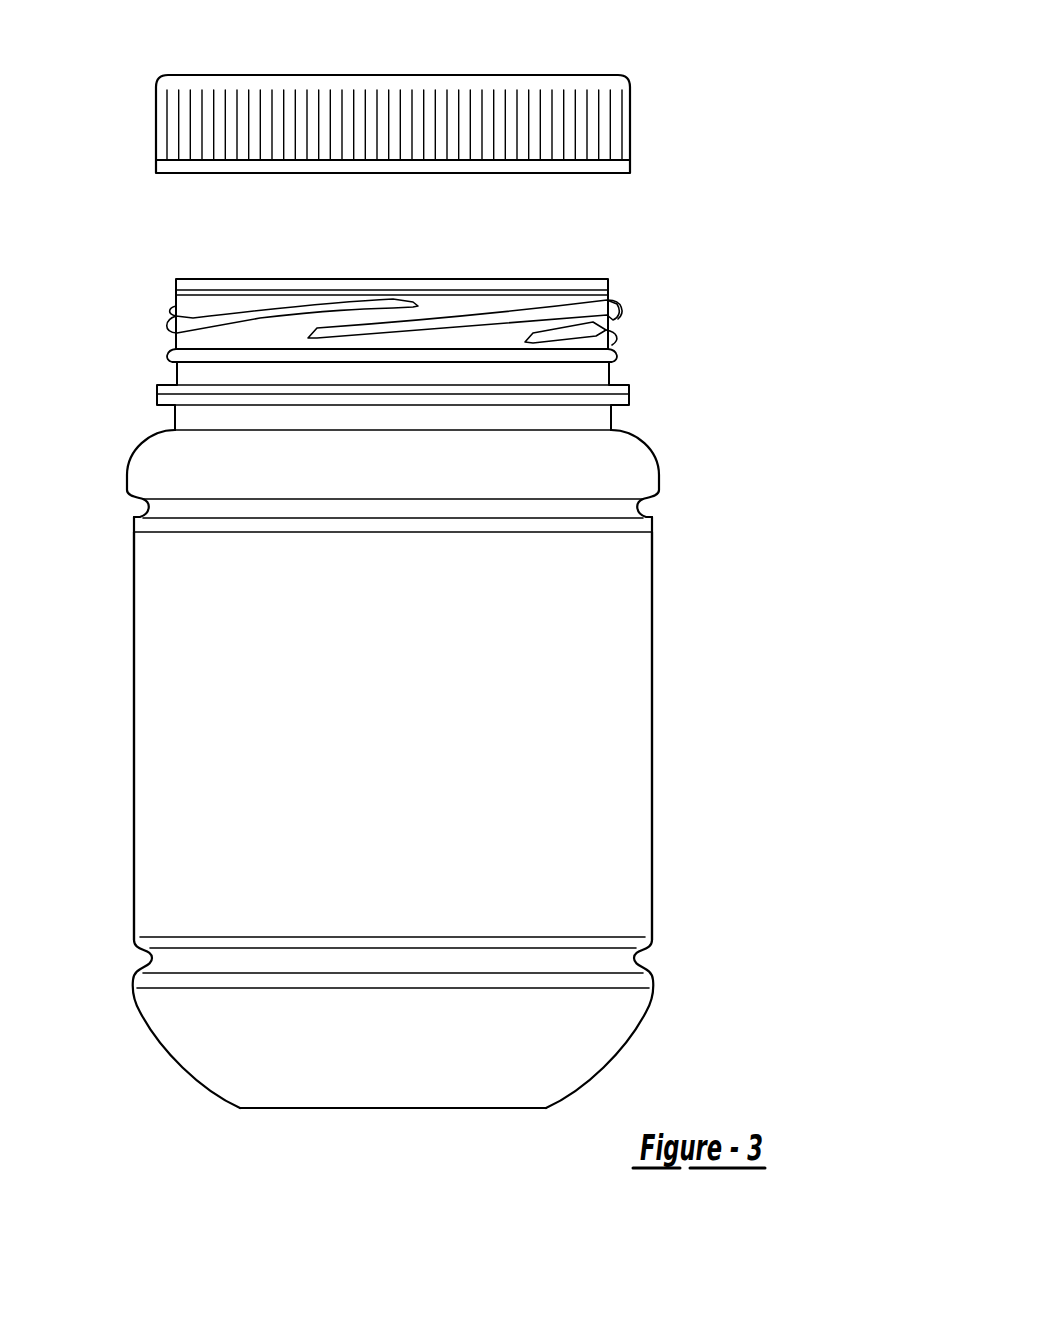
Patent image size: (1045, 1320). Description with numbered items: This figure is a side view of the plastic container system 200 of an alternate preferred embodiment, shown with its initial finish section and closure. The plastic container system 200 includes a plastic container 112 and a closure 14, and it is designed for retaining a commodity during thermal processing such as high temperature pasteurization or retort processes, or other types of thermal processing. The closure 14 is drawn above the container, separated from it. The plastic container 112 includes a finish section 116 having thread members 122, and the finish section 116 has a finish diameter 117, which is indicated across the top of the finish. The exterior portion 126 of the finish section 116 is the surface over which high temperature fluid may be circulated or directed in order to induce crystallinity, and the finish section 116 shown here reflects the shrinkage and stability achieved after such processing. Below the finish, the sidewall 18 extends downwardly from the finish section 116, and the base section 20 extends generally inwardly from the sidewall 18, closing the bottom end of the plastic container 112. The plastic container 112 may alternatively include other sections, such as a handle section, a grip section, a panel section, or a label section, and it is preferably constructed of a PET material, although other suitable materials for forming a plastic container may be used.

The plastic container system 200 is at (660, 52).
The closure 14 is at (563, 135).
The finish diameter 117 is at (179, 220).
The finish section 116 is at (613, 338).
The exterior portion 126 is at (170, 340).
The thread members 122 is at (610, 380).
The sidewall 18 is at (430, 693).
The plastic container 112 is at (572, 820).
The base section 20 is at (553, 1026).